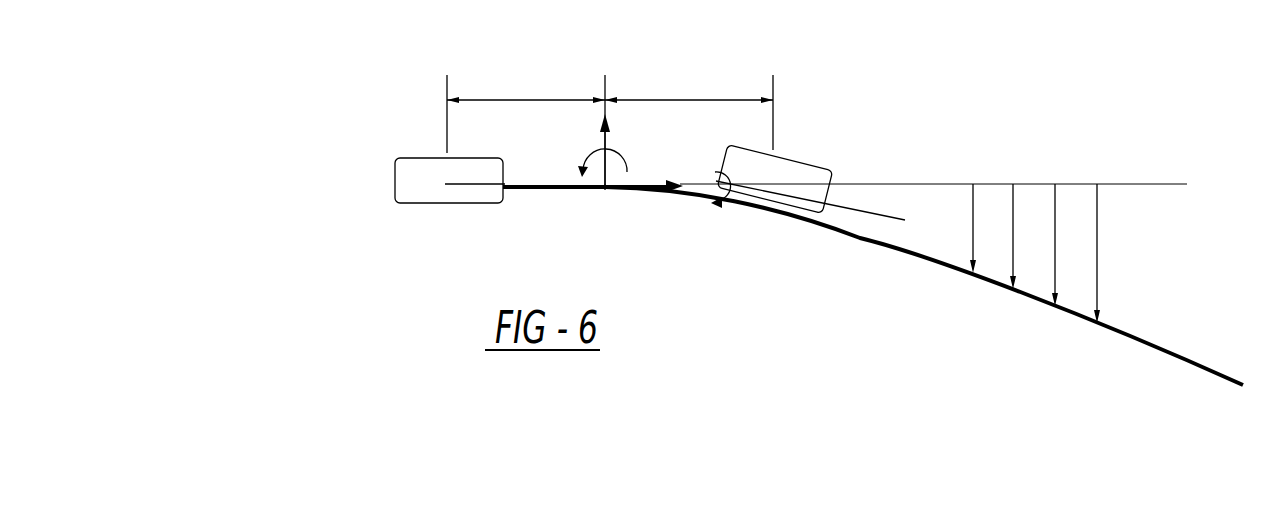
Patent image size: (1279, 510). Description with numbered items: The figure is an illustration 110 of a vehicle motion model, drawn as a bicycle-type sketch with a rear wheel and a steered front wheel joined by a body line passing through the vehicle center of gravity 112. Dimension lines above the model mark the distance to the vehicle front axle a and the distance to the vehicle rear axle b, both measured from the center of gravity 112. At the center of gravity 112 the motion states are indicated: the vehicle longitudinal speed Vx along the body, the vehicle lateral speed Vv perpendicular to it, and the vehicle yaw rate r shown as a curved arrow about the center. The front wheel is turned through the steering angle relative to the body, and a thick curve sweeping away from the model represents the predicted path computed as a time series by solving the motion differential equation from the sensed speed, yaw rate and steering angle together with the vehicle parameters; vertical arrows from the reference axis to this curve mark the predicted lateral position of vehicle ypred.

The illustration of a motion model 110 is at (886, 70).
The vehicle center of gravity 112 is at (604, 195).
The distance to the vehicle front axle a is at (689, 110).
The distance to the vehicle rear axle b is at (526, 112).
The vehicle longitudinal speed Vx is at (662, 205).
The vehicle lateral speed Vv is at (620, 150).
The vehicle yaw rate r is at (593, 160).
The lateral position of vehicle ypred is at (1069, 253).